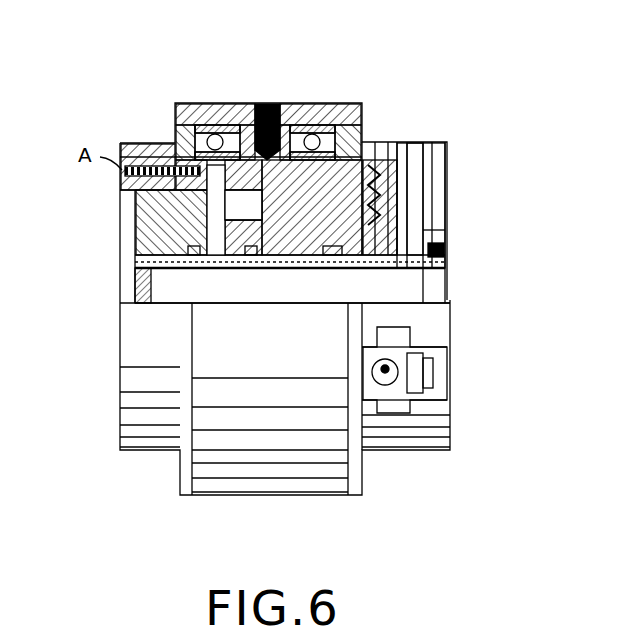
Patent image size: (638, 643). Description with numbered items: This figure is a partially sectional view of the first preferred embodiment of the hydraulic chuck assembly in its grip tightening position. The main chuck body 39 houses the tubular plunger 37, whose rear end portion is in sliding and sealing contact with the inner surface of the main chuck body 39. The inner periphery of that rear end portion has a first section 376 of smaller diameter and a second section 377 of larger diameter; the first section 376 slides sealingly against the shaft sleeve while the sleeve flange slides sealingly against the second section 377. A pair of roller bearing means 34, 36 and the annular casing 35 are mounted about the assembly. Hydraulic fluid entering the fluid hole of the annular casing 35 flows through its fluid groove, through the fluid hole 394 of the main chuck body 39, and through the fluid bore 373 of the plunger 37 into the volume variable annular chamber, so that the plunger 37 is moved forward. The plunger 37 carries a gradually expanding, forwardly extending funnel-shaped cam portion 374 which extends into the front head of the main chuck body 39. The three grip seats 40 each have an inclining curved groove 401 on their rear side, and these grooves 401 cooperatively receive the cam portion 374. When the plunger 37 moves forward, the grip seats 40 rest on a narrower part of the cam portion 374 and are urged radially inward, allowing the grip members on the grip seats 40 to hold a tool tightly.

The roller bearing means 34 is at (218, 103).
The annular casing 35 is at (249, 103).
The roller bearing means 36 is at (312, 103).
The main chuck body 39 is at (368, 145).
The funnel-shaped cam portion 374 is at (385, 165).
The grip seat 40 is at (450, 177).
The inclining curved groove 401 is at (400, 243).
The second section 377 is at (293, 270).
The tubular plunger 37 is at (300, 283).
The first section 376 is at (247, 267).
The fluid bore 373 is at (213, 222).
The fluid hole 394 is at (220, 223).